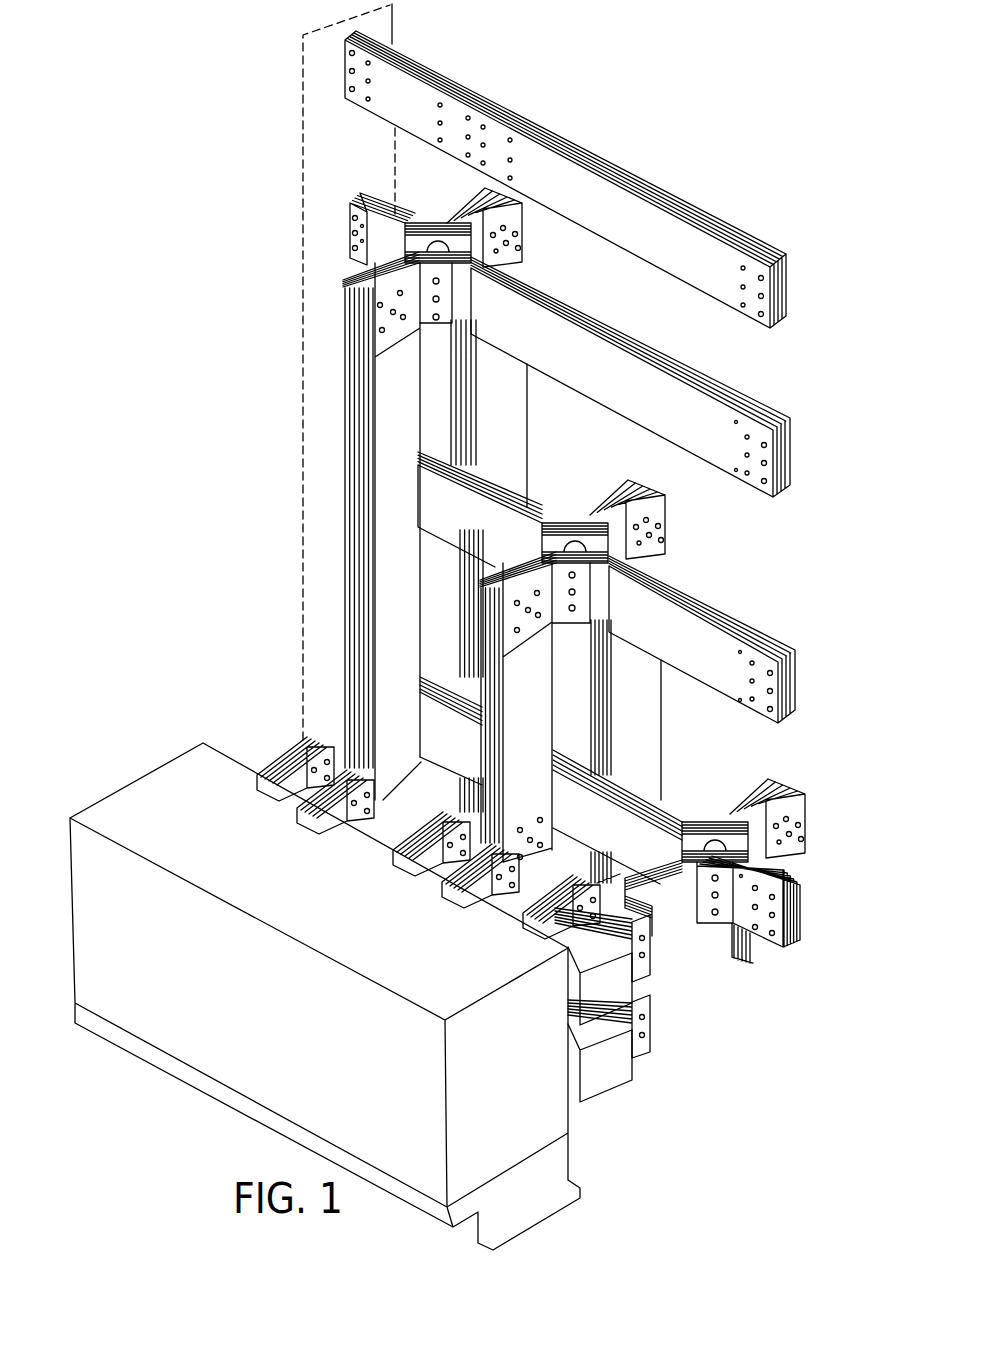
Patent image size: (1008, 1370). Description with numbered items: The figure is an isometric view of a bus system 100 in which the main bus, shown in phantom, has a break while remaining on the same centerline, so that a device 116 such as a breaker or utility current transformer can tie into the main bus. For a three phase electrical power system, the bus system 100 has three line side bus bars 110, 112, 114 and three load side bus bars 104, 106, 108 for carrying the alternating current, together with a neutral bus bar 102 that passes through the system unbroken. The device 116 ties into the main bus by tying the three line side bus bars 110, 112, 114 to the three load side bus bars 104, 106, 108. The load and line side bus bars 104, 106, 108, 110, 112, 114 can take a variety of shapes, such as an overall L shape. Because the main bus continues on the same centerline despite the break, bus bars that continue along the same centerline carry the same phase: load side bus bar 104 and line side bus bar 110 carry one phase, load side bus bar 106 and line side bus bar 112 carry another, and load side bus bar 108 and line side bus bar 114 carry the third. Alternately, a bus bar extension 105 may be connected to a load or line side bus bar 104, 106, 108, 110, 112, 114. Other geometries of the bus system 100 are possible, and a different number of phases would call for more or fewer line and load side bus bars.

The bus system 100 is at (205, 130).
The neutral bus bar 102 is at (727, 227).
The load side bus bar 104 is at (770, 418).
The bus bar extension 105 is at (397, 417).
The load side bus bar 106 is at (762, 640).
The load side bus bar 108 is at (767, 927).
The line side bus bar 110 is at (350, 235).
The line side bus bar 112 is at (455, 512).
The line side bus bar 114 is at (440, 730).
The device 116 is at (262, 1045).